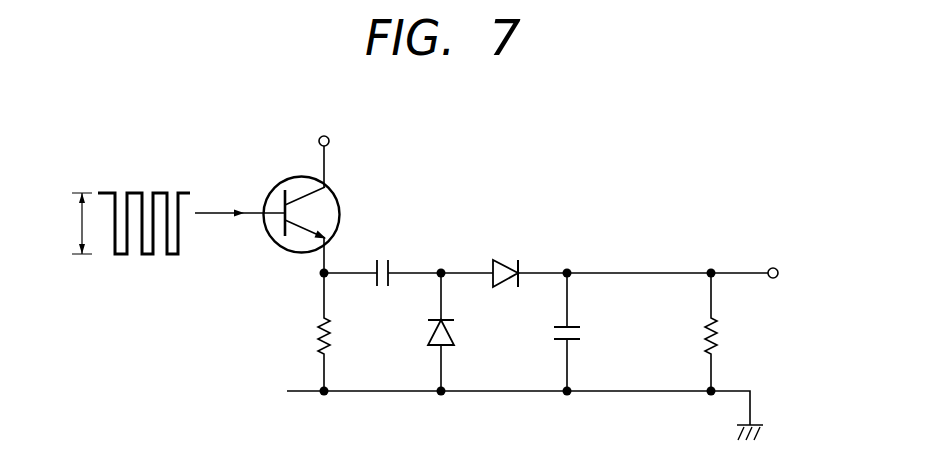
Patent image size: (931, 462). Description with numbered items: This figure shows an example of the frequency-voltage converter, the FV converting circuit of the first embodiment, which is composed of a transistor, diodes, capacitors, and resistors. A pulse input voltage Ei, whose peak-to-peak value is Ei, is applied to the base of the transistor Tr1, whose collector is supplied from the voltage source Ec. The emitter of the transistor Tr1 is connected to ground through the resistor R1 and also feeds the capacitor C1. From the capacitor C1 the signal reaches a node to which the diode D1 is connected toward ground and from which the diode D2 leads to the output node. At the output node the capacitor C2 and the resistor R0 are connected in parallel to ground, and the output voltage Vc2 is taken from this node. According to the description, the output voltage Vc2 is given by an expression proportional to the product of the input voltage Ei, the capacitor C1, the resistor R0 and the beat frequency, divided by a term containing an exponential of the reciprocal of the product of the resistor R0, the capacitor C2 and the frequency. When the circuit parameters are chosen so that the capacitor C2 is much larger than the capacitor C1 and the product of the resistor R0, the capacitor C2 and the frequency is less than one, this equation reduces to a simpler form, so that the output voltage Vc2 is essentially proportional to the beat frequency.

The input voltage Ei is at (169, 223).
The collector supply voltage Ec is at (325, 147).
The transistor Tr1 is at (298, 230).
The resistor R1 is at (342, 332).
The capacitor C1 is at (382, 258).
The diode D1 is at (460, 332).
The diode D2 is at (507, 258).
The capacitor C2 is at (583, 332).
The resistor R0 is at (728, 332).
The output voltage Vc2 is at (784, 259).